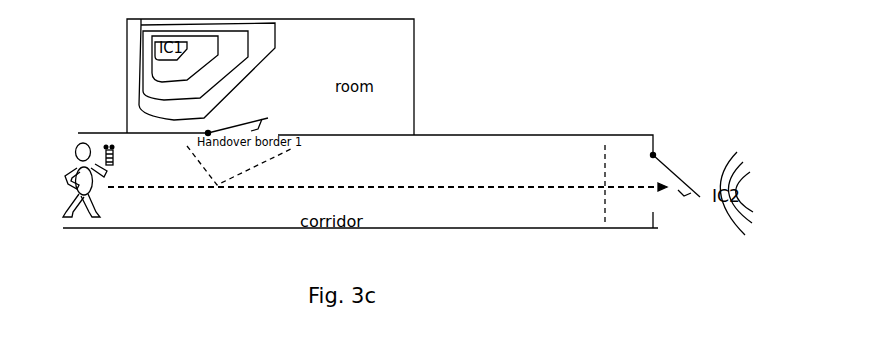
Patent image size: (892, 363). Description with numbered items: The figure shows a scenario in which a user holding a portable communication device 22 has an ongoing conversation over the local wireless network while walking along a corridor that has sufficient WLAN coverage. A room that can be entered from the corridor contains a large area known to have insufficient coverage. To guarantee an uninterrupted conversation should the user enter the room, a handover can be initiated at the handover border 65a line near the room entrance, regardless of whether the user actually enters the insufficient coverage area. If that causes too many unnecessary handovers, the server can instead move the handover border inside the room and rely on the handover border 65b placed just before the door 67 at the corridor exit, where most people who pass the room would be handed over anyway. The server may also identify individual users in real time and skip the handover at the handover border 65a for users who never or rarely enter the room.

The portable communication device 22 is at (114, 160).
The handover border 65a is at (278, 168).
The handover border 65b is at (603, 145).
The door 67 is at (670, 163).